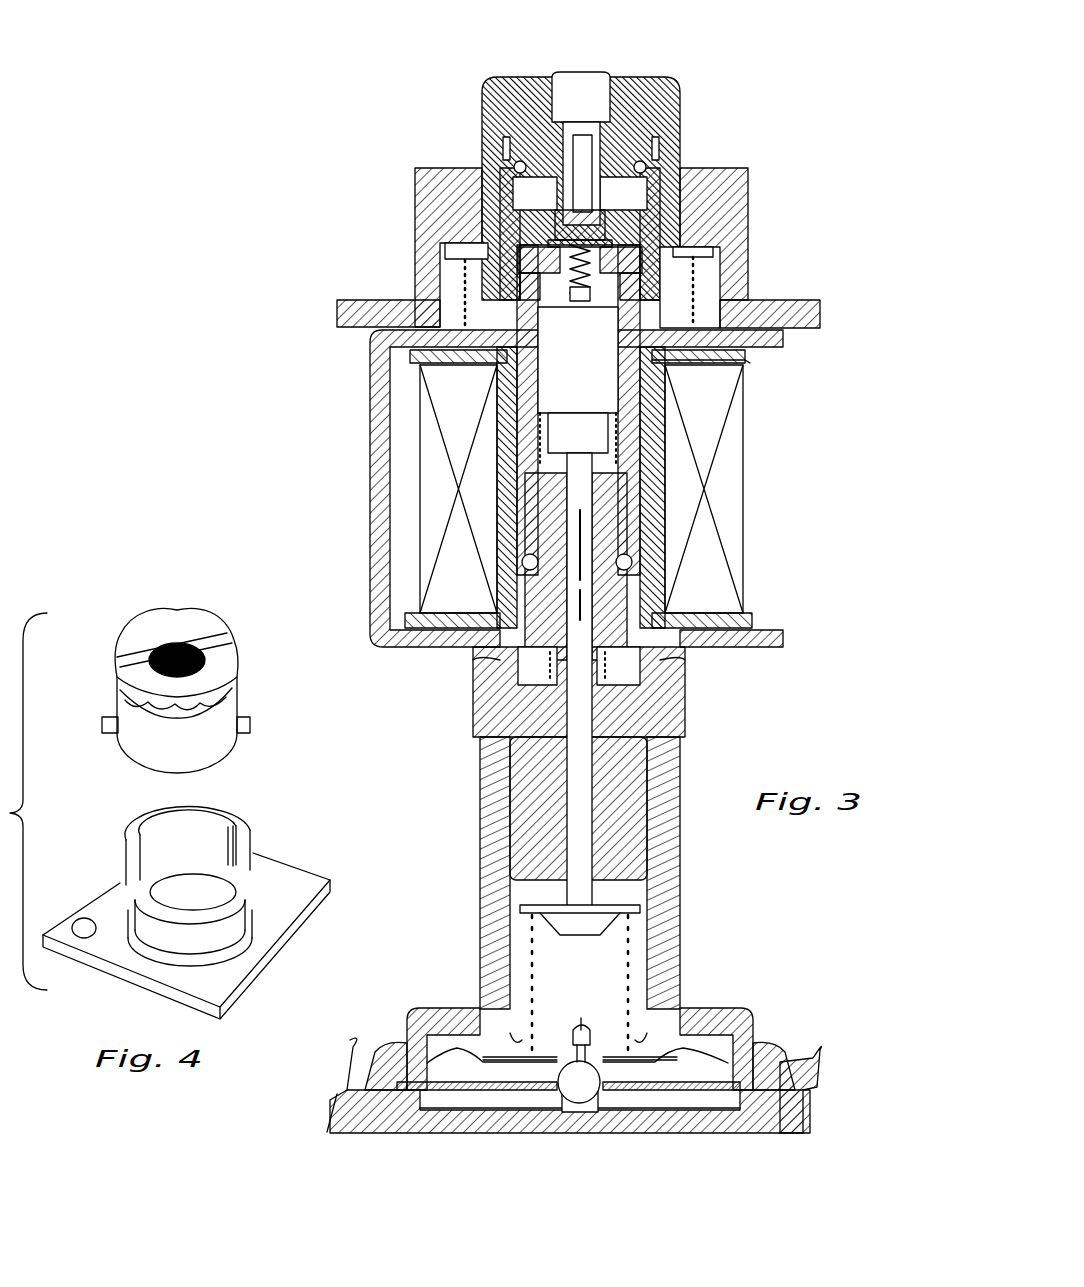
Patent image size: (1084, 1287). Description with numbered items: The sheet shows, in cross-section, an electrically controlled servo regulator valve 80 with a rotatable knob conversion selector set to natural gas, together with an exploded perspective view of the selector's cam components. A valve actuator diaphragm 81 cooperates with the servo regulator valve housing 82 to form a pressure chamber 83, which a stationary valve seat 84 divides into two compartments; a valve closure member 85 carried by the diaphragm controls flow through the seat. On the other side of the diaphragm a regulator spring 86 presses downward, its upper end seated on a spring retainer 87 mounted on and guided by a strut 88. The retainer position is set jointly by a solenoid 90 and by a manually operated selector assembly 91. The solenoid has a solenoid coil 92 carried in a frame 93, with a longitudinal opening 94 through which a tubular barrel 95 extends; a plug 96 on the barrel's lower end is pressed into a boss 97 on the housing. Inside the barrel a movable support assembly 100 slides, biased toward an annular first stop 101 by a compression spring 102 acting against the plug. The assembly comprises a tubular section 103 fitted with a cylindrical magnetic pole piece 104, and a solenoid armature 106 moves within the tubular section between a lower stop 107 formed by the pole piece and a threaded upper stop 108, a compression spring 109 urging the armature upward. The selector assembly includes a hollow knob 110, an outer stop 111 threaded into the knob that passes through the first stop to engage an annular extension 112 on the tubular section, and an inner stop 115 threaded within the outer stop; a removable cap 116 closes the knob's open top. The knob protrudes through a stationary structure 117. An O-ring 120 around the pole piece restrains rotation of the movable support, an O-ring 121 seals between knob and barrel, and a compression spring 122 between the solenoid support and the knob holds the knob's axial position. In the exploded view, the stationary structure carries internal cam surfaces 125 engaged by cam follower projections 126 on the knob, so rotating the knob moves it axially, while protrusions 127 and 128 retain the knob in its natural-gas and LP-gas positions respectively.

In FIG. 3, the servo regulator valve 80 is at (700, 890).
In FIG. 3, the valve actuator diaphragm 81 is at (730, 1050).
In FIG. 3, the servo regulator valve housing 82 is at (395, 1040).
In FIG. 3, the pressure chamber 83 is at (735, 1062).
In FIG. 3, the stationary valve seat 84 is at (600, 1100).
In FIG. 3, the valve closure member 85 is at (568, 1100).
In FIG. 3, the regulator spring 86 is at (620, 980).
In FIG. 3, the spring retainer 87 is at (625, 928).
In FIG. 3, the strut 88 is at (650, 888).
In FIG. 3, the solenoid 90 is at (352, 483).
In FIG. 3, the selector assembly 91 is at (375, 172).
In FIG. 3, the solenoid coil 92 is at (745, 470).
In FIG. 3, the frame 93 is at (368, 512).
In FIG. 3, the longitudinal opening 94 is at (665, 552).
In FIG. 3, the tubular barrel 95 is at (665, 450).
In FIG. 3, the plug 96 is at (700, 735).
In FIG. 3, the boss 97 is at (680, 775).
In FIG. 3, the movable support assembly 100 is at (490, 548).
In FIG. 3, the first stop 101 is at (748, 208).
In FIG. 3, the compression spring 102 is at (690, 672).
In FIG. 3, the tubular section 103 is at (665, 412).
In FIG. 3, the magnetic pole piece 104 is at (665, 595).
In FIG. 3, the solenoid armature 106 is at (745, 378).
In FIG. 3, the lower stop 107 is at (660, 470).
In FIG. 3, the upper stop 108 is at (650, 310).
In FIG. 3, the compression spring 109 is at (485, 445).
In FIG. 3, the hollow knob 110 is at (680, 105).
In FIG. 4, the hollow knob 110 is at (237, 697).
In FIG. 3, the outer stop 111 is at (702, 175).
In FIG. 3, the annular extension 112 is at (490, 260).
In FIG. 3, the inner stop 115 is at (430, 287).
In FIG. 3, the removable cap 116 is at (603, 74).
In FIG. 3, the stationary structure 117 is at (415, 222).
In FIG. 4, the stationary structure 117 is at (313, 867).
In FIG. 3, the O-ring 120 is at (475, 672).
In FIG. 3, the O-ring 121 is at (690, 158).
In FIG. 3, the compression spring 122 is at (740, 300).
In FIG. 4, the cam surfaces 125 is at (130, 870).
In FIG. 4, the cam follower projections 126 is at (117, 713).
In FIG. 4, the protrusion 127 is at (177, 833).
In FIG. 4, the protrusion 128 is at (233, 857).